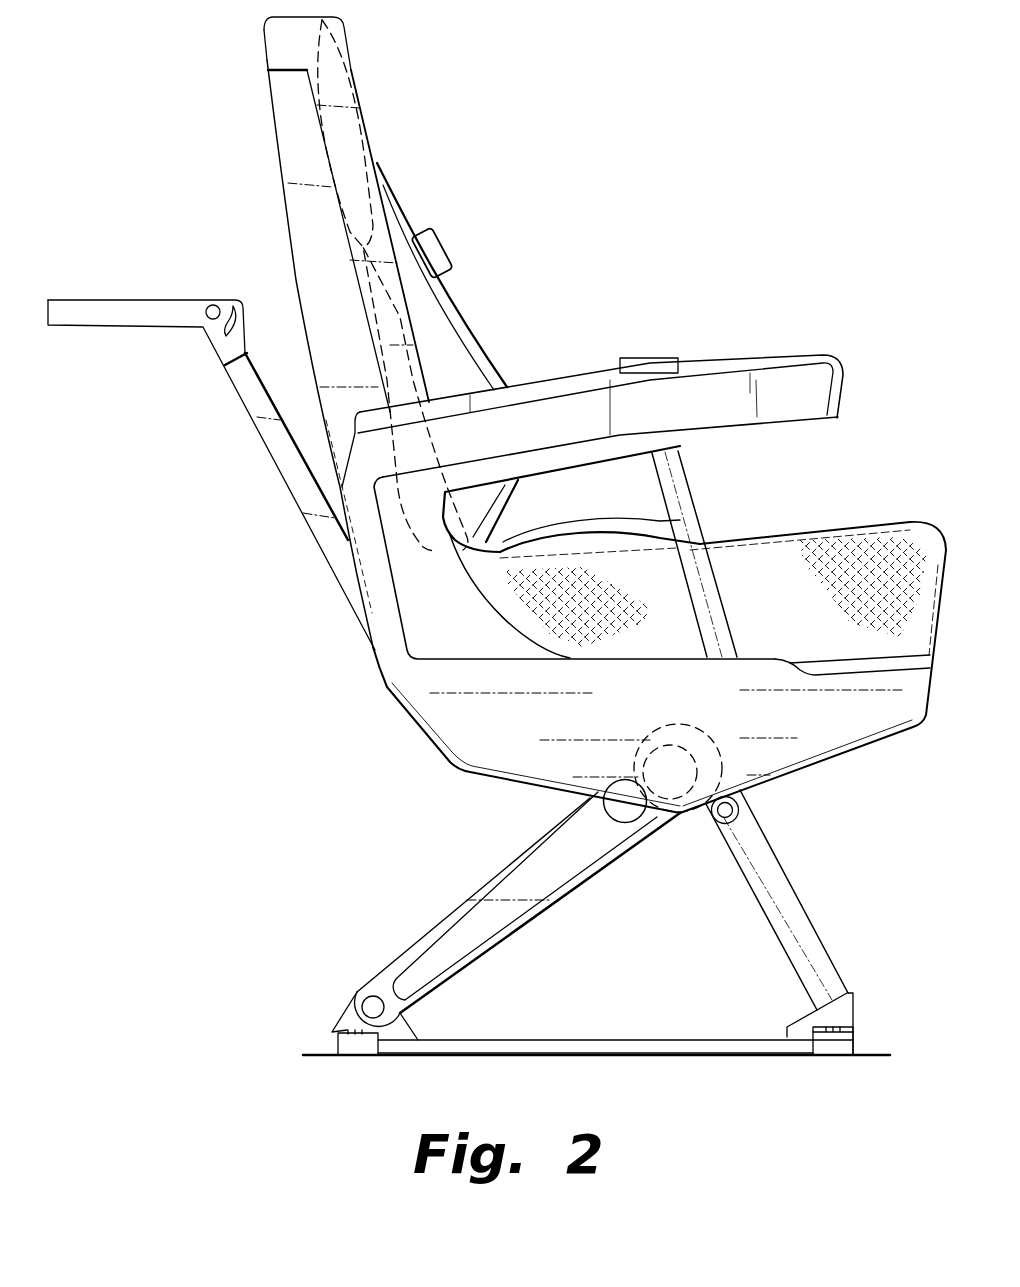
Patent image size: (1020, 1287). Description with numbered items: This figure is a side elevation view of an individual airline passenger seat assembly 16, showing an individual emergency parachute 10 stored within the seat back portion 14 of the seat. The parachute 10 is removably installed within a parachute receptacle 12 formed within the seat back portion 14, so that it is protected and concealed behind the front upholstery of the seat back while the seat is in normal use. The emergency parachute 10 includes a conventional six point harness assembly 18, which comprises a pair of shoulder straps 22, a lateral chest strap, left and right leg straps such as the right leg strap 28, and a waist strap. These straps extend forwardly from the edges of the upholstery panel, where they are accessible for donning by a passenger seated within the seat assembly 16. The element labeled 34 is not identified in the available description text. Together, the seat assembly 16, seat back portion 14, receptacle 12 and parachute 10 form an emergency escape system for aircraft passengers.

The emergency parachute 10 is at (312, 231).
The parachute receptacle 12 is at (350, 247).
The seat back portion 14 is at (284, 201).
The airline passenger seat assembly 16 is at (242, 760).
The harness assembly 18 is at (645, 523).
The shoulder straps 22 is at (483, 324).
The right leg strap 28 is at (630, 527).
The headrest 34 is at (266, 54).